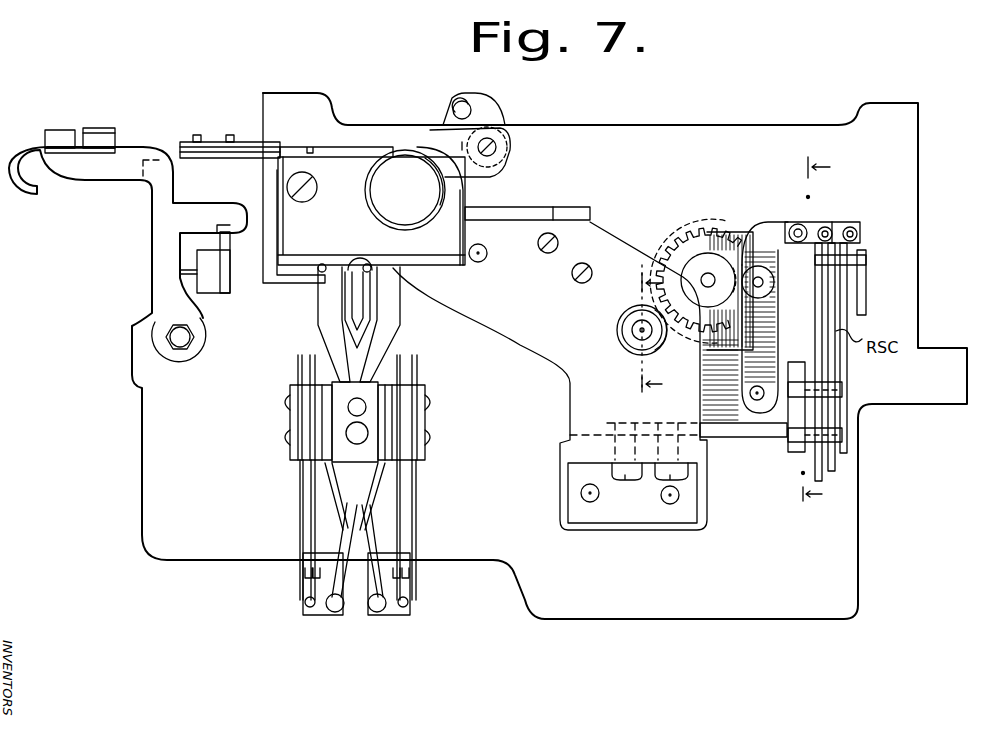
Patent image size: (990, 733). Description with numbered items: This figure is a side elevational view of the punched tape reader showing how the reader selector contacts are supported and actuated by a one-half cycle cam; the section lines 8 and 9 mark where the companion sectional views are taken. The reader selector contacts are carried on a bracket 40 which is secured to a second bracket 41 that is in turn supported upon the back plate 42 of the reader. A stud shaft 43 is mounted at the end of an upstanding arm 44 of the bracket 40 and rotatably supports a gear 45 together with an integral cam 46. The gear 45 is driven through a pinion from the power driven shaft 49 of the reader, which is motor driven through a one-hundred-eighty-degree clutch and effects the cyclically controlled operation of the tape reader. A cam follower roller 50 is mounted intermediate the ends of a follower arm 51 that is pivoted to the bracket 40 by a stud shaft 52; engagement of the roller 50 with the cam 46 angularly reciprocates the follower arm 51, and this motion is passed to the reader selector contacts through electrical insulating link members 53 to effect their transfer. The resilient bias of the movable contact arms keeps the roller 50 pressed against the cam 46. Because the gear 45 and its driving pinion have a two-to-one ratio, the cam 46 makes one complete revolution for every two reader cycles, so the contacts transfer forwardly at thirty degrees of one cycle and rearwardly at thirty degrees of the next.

The section line 8- 8 is at (657, 331).
The section line 9- 9 is at (823, 333).
The bracket 40 is at (747, 438).
The bracket 41 is at (572, 410).
The back plate 42 is at (647, 619).
The stud shaft 43 is at (706, 275).
The upstanding arm 44 is at (656, 358).
The gear 45 is at (720, 236).
The cam 46 is at (740, 252).
The power driven shaft 49 is at (618, 326).
The cam follower roller 50 is at (774, 290).
The follower arm 51 is at (772, 326).
The stud shaft 52 is at (750, 393).
The electrical insulating link members 53 is at (812, 225).